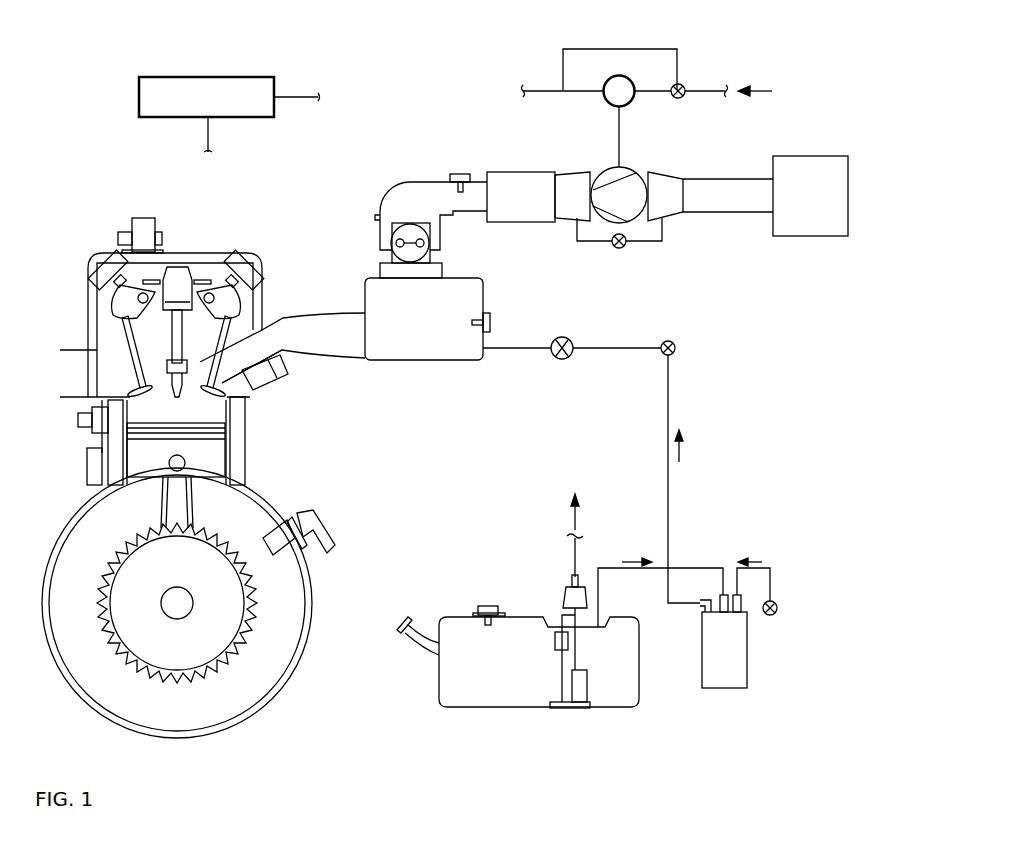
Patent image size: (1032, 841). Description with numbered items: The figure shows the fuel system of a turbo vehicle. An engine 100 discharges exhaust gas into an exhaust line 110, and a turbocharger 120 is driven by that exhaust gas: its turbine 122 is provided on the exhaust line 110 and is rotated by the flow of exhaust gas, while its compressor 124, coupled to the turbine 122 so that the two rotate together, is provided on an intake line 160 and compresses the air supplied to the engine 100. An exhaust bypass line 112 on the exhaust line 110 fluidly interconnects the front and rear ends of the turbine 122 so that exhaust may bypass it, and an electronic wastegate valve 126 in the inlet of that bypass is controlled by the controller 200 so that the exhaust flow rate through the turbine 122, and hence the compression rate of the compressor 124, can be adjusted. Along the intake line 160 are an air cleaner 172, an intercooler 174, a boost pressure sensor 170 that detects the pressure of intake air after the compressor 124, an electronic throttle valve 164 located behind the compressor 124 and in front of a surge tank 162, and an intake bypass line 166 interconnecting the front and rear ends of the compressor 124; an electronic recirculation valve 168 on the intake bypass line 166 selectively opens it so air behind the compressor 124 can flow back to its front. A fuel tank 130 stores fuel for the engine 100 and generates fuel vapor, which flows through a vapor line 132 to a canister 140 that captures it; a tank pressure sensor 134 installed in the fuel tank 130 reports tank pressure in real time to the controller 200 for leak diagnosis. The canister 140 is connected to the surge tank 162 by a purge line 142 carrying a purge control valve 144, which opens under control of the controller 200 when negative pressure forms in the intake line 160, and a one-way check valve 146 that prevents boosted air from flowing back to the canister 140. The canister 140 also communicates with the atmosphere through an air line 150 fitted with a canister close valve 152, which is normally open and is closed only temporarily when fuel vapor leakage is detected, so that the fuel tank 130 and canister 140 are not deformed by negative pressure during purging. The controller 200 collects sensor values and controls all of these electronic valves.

The engine 100 is at (256, 463).
The exhaust line 110 is at (705, 90).
The exhaust bypass line 112 is at (615, 48).
The turbocharger 120 is at (527, 110).
The turbine 122 is at (604, 94).
The compressor 124 is at (600, 175).
The wastegate valve 126 is at (685, 97).
The fuel tank 130 is at (437, 680).
The vapor line 132 is at (637, 572).
The tank pressure sensor 134 is at (488, 604).
The canister 140 is at (747, 655).
The purge line 142 is at (668, 498).
The purge control valve 144 is at (676, 348).
The check valve 146 is at (562, 337).
The air line 150 is at (771, 590).
The canister close valve 152 is at (778, 608).
The intake line 160 is at (395, 183).
The surge tank 162 is at (425, 360).
The electronic throttle valve 164 is at (395, 232).
The intake bypass line 166 is at (662, 250).
The recirculation valve 168 is at (619, 249).
The boost pressure sensor 170 is at (456, 172).
The air cleaner 172 is at (810, 236).
The intercooler 174 is at (520, 222).
The controller 200 is at (226, 76).